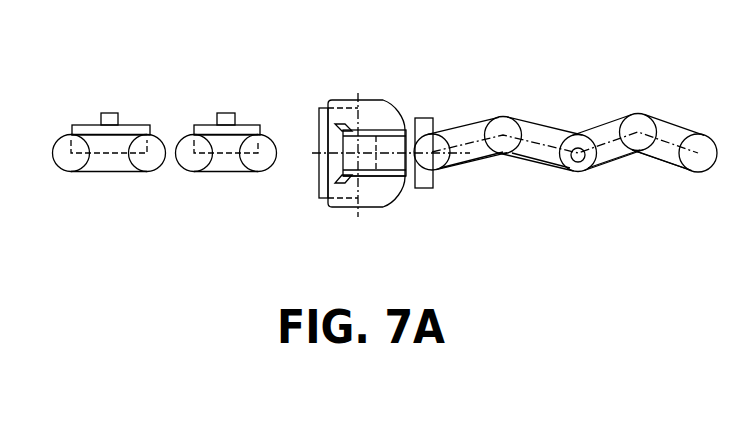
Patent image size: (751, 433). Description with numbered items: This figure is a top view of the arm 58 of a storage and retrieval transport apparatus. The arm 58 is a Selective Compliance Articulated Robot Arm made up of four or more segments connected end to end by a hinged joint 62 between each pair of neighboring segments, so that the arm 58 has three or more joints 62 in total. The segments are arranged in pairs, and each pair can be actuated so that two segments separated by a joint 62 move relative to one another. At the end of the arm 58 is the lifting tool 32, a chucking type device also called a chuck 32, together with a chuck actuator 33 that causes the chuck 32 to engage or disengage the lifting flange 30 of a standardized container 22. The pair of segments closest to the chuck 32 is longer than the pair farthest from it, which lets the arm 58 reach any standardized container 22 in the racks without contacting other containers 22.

The standardized container 22 is at (375, 116).
The lifting flange 30 is at (338, 163).
The lifting tool 32 is at (392, 165).
The chuck actuator 33 is at (431, 148).
The arm 58 is at (568, 172).
The hinged joint 62 is at (507, 133).